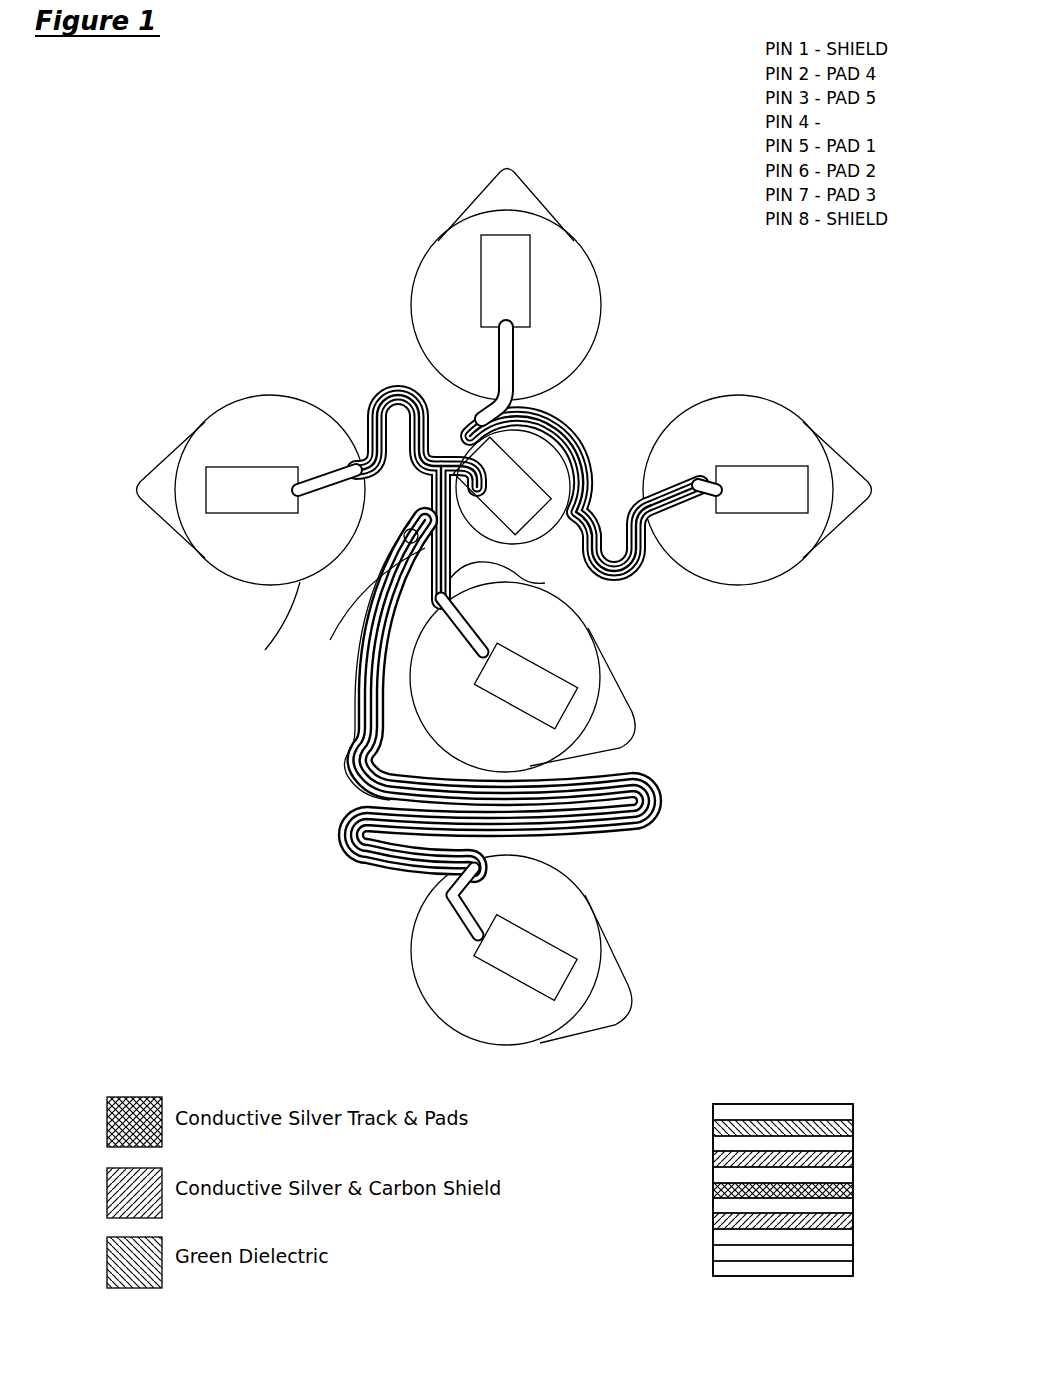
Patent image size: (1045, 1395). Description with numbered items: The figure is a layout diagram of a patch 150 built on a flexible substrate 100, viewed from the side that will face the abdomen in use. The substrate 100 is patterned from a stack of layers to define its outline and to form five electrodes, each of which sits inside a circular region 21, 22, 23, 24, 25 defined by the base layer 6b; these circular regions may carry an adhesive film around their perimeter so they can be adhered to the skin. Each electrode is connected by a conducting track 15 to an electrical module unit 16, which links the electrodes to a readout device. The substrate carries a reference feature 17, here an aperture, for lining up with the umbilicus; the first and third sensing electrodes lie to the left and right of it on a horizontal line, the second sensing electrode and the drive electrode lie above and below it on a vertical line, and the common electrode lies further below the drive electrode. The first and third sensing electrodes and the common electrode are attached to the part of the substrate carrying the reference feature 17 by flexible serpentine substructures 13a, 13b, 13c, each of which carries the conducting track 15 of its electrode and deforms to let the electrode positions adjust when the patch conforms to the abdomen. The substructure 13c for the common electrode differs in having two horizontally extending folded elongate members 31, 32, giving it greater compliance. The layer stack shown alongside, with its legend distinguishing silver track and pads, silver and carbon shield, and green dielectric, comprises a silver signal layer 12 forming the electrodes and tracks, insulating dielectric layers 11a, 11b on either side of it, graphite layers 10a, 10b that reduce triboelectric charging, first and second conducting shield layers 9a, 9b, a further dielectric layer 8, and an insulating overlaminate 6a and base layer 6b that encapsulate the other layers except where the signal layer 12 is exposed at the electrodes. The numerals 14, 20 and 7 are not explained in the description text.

The flexible substrate 100 is at (268, 312).
The patch 150 is at (228, 365).
The pad 14 is at (570, 258).
The conducting track 15 is at (392, 395).
The electrical module unit 16 is at (527, 492).
The reference feature 17 is at (330, 590).
The dielectric layer outline 20 is at (385, 600).
The circular region 21 is at (172, 545).
The circular region 22 is at (550, 188).
The circular region 23 is at (832, 562).
The circular region 24 is at (632, 712).
The circular region 25 is at (605, 910).
The flexible substructure 13a is at (378, 390).
The flexible substructure 13b is at (597, 510).
The flexible substructure 13c is at (328, 792).
The folded elongate member 31 is at (662, 808).
The folded elongate member 32 is at (340, 840).
The insulating overlaminate 6a is at (732, 1112).
The insulating base layer 6b is at (780, 1252).
The base substrate 7 is at (733, 1268).
The insulating dielectric layer 8 is at (775, 1128).
The first conducting shield layer 9a is at (820, 1145).
The second conducting shield layer 9b is at (823, 1237).
The graphite layer 10a is at (848, 1158).
The graphite layer 10b is at (850, 1220).
The insulating dielectric layer 11a is at (848, 1175).
The insulating dielectric layer 11b is at (848, 1204).
The signal layer 12 is at (848, 1192).